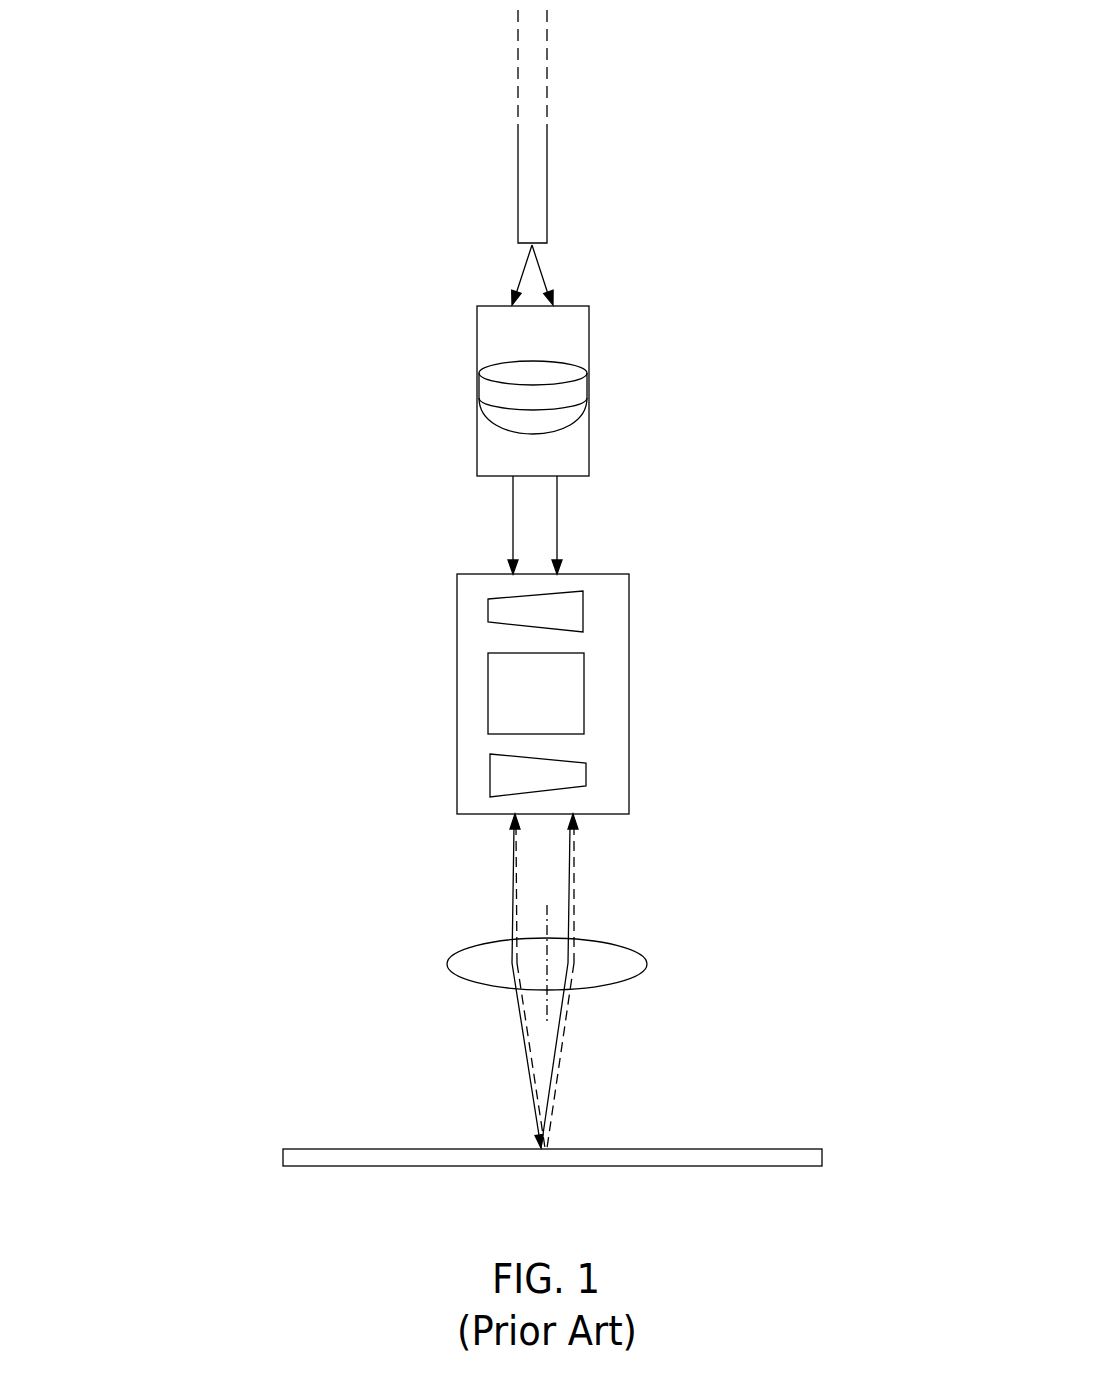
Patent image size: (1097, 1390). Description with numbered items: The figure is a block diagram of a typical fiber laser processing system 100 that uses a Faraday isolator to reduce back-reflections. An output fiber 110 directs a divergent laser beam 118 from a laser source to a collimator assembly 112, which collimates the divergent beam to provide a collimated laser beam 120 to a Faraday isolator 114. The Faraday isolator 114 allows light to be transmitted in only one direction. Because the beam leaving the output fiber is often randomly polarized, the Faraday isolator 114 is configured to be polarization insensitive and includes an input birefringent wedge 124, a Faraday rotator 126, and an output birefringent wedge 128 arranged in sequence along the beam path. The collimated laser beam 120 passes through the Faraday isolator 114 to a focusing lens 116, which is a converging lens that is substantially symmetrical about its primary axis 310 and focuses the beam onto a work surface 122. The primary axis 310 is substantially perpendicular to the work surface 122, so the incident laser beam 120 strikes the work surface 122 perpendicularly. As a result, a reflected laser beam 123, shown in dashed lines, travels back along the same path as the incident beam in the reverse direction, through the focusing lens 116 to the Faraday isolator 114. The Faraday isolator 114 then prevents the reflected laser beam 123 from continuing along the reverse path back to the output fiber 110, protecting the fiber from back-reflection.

The fiber laser processing system 100 is at (310, 45).
The output fiber 110 is at (547, 182).
The divergent laser beam 118 is at (545, 270).
The collimator assembly 112 is at (589, 393).
The collimated laser beam 120 is at (558, 517).
The Faraday isolator 114 is at (530, 695).
The input birefringent wedge 124 is at (488, 608).
The Faraday rotator 126 is at (488, 687).
The output birefringent wedge 128 is at (490, 771).
The primary axis 310 is at (547, 912).
The focusing lens 116 is at (617, 946).
The reflected laser beam 123 is at (566, 1017).
The work surface 122 is at (412, 1149).